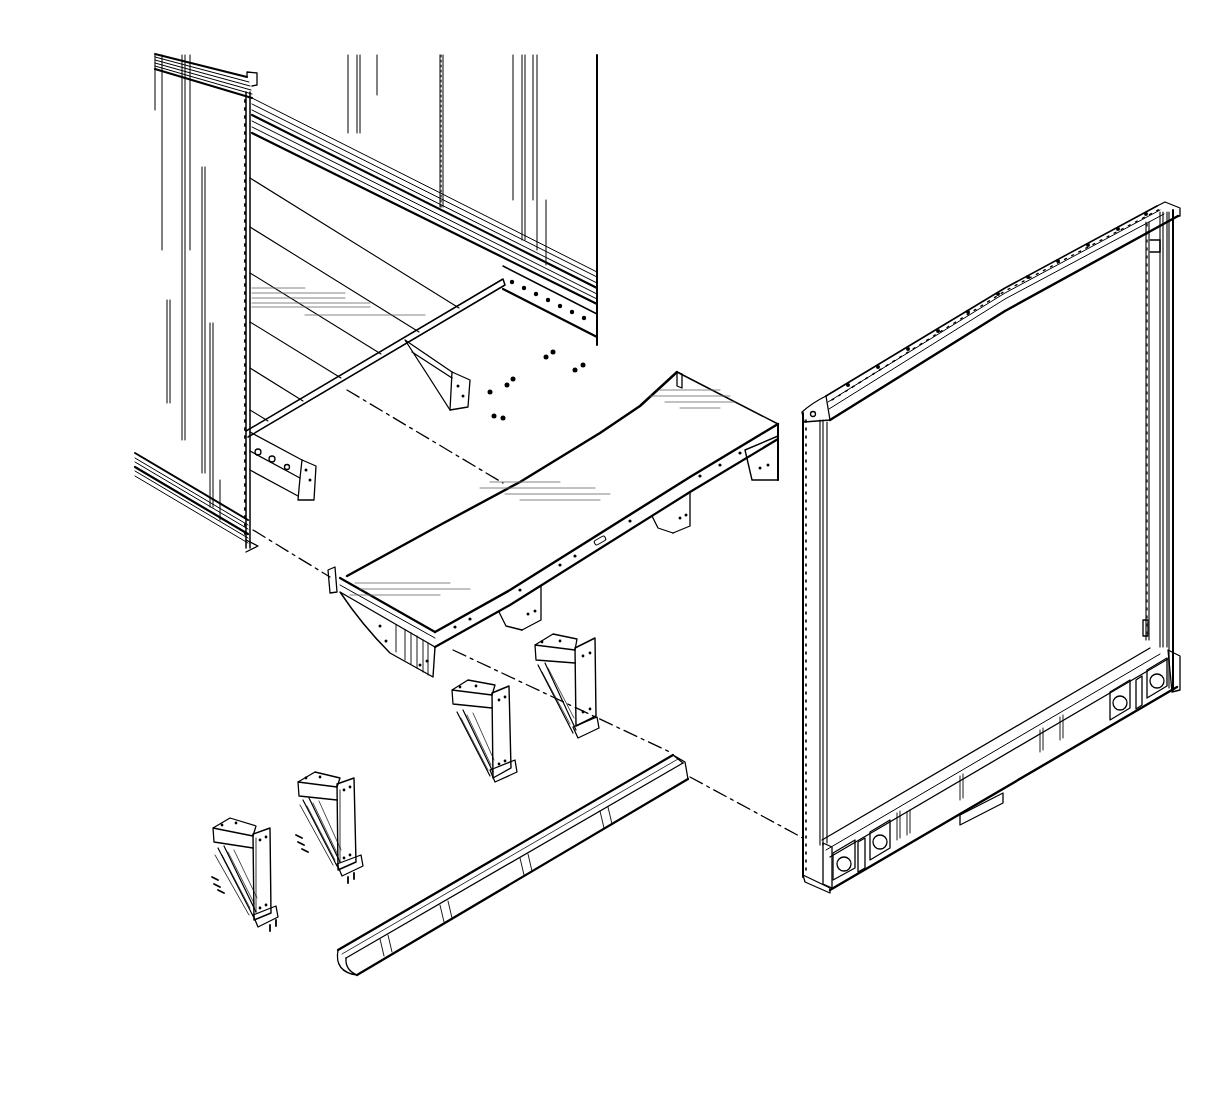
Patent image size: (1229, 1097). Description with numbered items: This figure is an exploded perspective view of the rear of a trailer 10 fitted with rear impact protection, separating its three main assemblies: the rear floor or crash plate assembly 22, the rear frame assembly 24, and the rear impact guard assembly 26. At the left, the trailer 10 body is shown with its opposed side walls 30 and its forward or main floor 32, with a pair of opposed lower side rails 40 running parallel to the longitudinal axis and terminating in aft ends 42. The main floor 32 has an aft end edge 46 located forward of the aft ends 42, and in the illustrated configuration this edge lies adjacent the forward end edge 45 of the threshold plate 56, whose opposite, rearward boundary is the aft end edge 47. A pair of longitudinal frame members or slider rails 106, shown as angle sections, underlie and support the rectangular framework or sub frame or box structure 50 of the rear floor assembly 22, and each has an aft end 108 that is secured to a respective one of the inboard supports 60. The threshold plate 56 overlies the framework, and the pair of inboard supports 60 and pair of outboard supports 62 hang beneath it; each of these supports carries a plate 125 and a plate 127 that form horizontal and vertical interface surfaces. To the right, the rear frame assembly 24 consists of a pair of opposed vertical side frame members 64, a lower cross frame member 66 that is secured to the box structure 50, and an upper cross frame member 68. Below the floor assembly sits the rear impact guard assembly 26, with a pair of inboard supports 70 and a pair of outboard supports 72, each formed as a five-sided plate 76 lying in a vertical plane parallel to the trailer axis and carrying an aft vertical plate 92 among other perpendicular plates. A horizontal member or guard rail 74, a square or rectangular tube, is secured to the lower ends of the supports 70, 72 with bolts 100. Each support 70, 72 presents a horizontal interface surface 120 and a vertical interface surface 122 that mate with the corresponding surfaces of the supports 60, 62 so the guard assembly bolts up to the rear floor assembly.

The trailer 10 is at (696, 114).
The rear floor or crash plate assembly 22 is at (745, 390).
The rear frame assembly 24 is at (1170, 200).
The rear impact guard assembly 26 is at (652, 682).
The side walls 30 is at (162, 305).
The main floor 32 is at (348, 254).
The lower side rails 40 is at (466, 232).
The aft ends 42 is at (600, 313).
The forward end edge 45 is at (457, 519).
The aft end edge 46 is at (378, 360).
The aft end edge 47 is at (585, 552).
The rectangular framework or sub frame or box structure 50 is at (593, 435).
The threshold plate 56 is at (547, 534).
The inboard supports 60 is at (671, 532).
The outboard supports 62 is at (748, 482).
The vertical side frame members 64 is at (1172, 388).
The lower cross frame member 66 is at (1018, 727).
The upper cross frame member 68 is at (993, 300).
The inboard supports 70 is at (478, 742).
The outboard supports 72 is at (598, 680).
The horizontal member or guard rail 74 is at (515, 872).
The five-sided plate 76 is at (228, 860).
The aft vertical plate 92 is at (358, 808).
The bolts 100 is at (357, 872).
The longitudinal frame members or slider rails 106 is at (440, 356).
The aft end 108 is at (477, 385).
The horizontal interface surface 120 is at (310, 775).
The vertical interface surface 122 is at (263, 832).
The plate 125 is at (662, 515).
The plate 127 is at (692, 508).